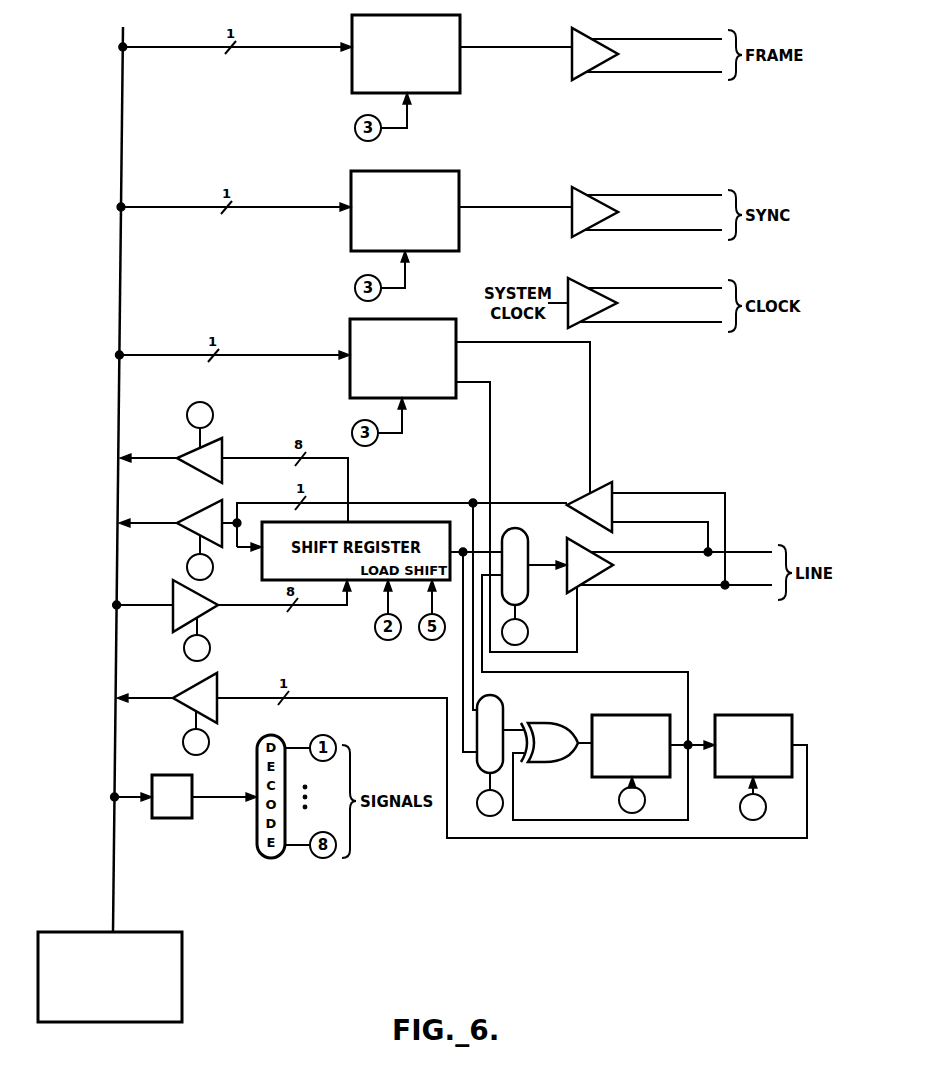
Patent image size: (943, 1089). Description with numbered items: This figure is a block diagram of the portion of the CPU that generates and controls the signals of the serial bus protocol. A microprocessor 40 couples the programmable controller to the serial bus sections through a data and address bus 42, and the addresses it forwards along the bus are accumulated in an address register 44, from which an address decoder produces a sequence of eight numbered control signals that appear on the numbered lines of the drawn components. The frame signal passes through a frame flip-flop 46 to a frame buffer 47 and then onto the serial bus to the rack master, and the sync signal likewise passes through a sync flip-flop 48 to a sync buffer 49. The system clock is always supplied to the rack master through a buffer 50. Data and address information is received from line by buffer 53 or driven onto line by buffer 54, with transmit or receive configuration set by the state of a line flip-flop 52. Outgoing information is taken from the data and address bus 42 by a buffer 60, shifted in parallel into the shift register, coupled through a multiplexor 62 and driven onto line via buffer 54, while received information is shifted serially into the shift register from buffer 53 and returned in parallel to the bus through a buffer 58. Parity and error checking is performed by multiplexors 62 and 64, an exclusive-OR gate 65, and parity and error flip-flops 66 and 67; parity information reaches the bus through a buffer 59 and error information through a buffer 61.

The microprocessor 40 is at (162, 932).
The data and address bus 42 is at (108, 628).
The address register 44 is at (172, 818).
The frame flip-flop 46 is at (453, 17).
The frame buffer 47 is at (590, 36).
The sync flip-flop 48 is at (452, 171).
The sync buffer 49 is at (590, 195).
The buffer 50 is at (585, 287).
The line flip-flop 52 is at (440, 319).
The buffer 53 is at (605, 486).
The buffer 54 is at (585, 582).
The buffer 58 is at (213, 442).
The buffer 59 is at (222, 506).
The buffer 60 is at (208, 599).
The buffer 61 is at (221, 693).
The multiplexor 62 is at (538, 521).
The multiplexor 64 is at (513, 686).
The exclusive-OR gate 65 is at (551, 711).
The parity flip-flop 66 is at (635, 715).
The error flip-flop 67 is at (760, 715).